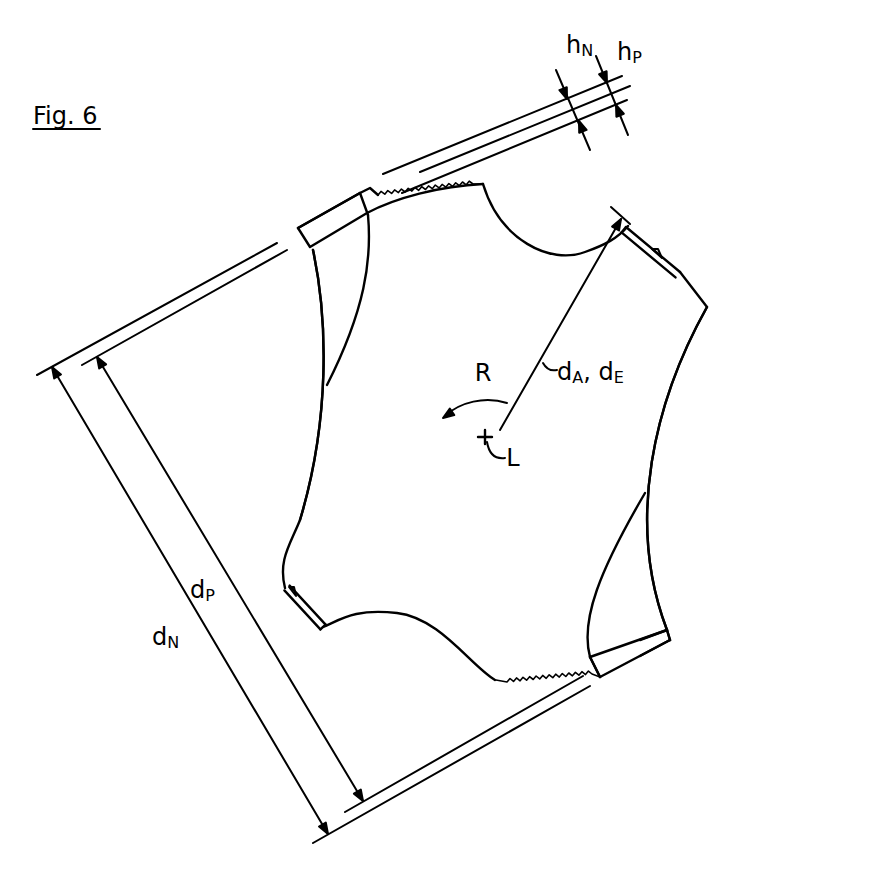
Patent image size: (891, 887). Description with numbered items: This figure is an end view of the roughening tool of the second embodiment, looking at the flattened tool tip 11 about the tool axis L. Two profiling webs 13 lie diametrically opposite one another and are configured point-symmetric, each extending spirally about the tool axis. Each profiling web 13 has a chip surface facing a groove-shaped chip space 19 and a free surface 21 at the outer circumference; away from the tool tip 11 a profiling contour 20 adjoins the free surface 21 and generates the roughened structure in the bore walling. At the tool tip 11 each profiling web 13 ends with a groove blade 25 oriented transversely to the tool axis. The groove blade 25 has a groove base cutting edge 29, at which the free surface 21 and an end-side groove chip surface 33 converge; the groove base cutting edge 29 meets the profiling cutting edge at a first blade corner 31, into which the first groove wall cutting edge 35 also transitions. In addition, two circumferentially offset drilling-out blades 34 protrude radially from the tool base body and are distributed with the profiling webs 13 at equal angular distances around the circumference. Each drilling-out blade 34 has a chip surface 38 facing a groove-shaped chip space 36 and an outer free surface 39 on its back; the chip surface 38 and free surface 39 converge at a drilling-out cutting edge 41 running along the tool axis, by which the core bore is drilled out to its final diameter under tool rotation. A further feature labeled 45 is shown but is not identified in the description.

The tool tip 11 is at (555, 290).
The profiling webs 13 is at (377, 81).
The chip space 19 is at (676, 380).
The profiling contour 20 is at (421, 179).
The free surface 21 is at (600, 680).
The groove blade 25 is at (336, 198).
The groove base cutting edge 29 is at (647, 647).
The first blade corner 31 is at (670, 640).
The groove chip surface 33 is at (650, 647).
The drilling-out blades 34 is at (677, 213).
The first groove wall cutting edge 35 is at (680, 267).
The chip space 36 is at (543, 252).
The chip surface 38 is at (618, 208).
The outer free surface 39 is at (663, 247).
The drilling-out cutting edge 41 is at (637, 233).
The chamfer transition edge 45 is at (653, 248).